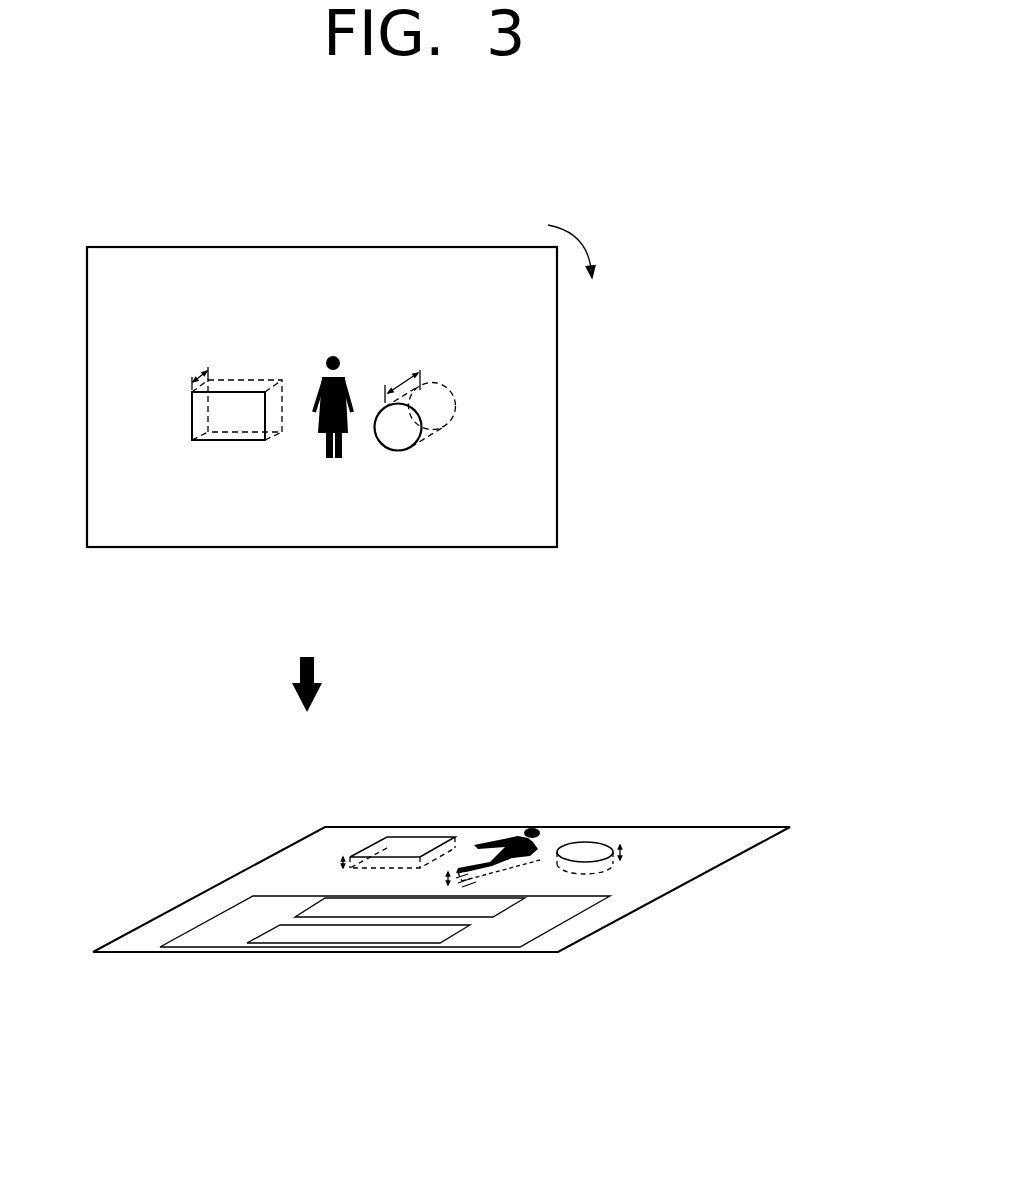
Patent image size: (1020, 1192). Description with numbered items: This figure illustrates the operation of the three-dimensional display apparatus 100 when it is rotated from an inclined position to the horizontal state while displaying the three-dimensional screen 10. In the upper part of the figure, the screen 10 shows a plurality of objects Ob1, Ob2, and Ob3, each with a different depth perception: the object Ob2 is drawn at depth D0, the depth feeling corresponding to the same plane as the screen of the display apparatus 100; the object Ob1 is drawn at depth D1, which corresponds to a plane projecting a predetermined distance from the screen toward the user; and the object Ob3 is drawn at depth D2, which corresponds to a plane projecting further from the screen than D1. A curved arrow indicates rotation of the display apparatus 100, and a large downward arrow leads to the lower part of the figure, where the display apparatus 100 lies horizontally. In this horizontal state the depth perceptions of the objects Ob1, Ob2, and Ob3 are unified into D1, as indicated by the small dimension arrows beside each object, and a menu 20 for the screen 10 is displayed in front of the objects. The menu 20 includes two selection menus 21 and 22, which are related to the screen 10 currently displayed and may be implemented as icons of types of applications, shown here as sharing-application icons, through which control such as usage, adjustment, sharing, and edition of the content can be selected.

The 3D display apparatus 100 is at (150, 247).
The 3D screen 10 is at (384, 260).
The menu 20 is at (205, 920).
The selection menu 21 is at (478, 913).
The selection menu 22 is at (280, 937).
The object Ob1 is at (200, 441).
The object Ob2 is at (323, 460).
The object Ob3 is at (398, 450).
The depth perception D0 is at (333, 342).
The depth perception D1 is at (416, 618).
The depth perception D2 is at (401, 380).